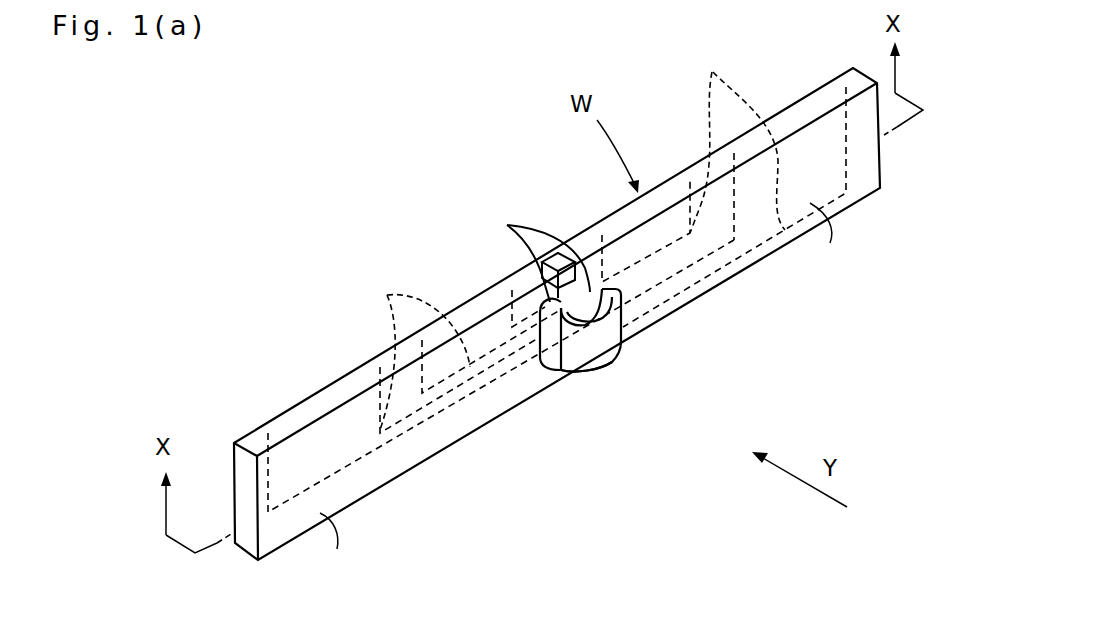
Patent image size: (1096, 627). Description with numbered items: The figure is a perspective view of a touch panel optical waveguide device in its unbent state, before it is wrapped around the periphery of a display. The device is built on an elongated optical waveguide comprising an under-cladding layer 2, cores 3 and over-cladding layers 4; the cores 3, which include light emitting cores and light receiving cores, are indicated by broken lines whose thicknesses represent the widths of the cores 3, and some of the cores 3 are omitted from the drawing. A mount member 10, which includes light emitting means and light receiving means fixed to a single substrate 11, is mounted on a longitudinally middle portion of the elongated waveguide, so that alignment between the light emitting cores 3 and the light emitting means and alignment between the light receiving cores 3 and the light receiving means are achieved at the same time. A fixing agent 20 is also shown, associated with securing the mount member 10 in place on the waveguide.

The under-cladding layer 2 is at (297, 403).
The cores 3 is at (576, 234).
The over-cladding layers 4 is at (579, 390).
The mount member 10 is at (625, 359).
The substrate 11 is at (597, 370).
The fixing agent 20 is at (530, 250).